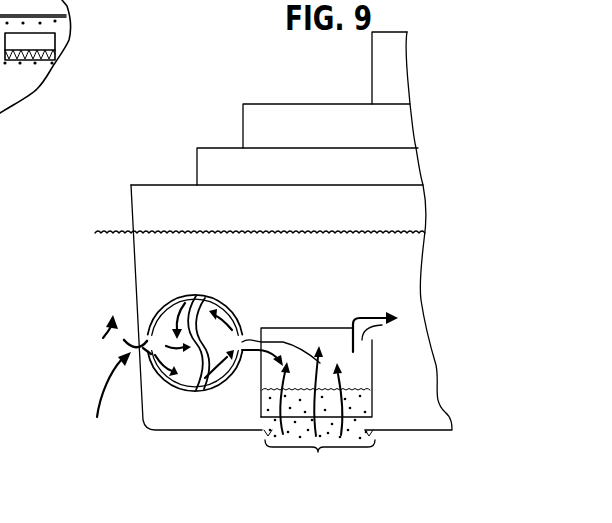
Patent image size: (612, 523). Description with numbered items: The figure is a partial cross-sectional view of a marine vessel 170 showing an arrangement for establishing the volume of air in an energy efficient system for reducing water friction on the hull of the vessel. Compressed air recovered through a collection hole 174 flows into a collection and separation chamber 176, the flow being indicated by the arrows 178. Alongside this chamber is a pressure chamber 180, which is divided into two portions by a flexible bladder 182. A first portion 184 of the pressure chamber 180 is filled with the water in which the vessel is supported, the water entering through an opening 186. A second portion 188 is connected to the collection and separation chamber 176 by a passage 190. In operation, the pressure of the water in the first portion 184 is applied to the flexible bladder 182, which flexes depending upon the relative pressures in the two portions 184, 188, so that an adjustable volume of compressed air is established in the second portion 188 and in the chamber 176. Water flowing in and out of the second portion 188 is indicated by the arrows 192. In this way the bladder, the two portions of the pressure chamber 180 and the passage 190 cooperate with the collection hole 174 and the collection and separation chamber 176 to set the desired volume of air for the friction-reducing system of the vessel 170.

The marine vessel 170 is at (178, 158).
The collection hole 174 is at (321, 404).
The collection and separation chamber 176 is at (323, 318).
The arrows 178 is at (320, 390).
The pressure chamber 180 is at (180, 292).
The flexible bladder 182 is at (206, 296).
The first portion 184 is at (172, 382).
The opening 186 is at (126, 342).
The second portion 188 is at (203, 385).
The passage 190 is at (257, 325).
The arrows 192 is at (102, 335).